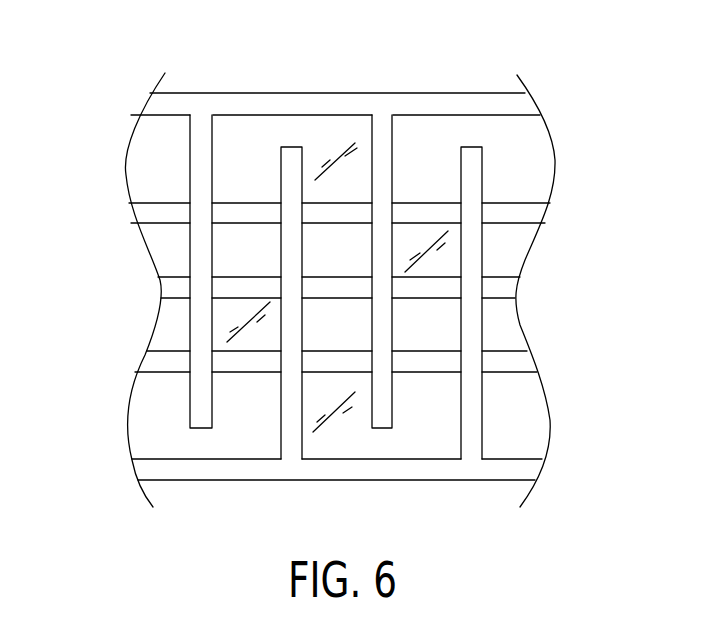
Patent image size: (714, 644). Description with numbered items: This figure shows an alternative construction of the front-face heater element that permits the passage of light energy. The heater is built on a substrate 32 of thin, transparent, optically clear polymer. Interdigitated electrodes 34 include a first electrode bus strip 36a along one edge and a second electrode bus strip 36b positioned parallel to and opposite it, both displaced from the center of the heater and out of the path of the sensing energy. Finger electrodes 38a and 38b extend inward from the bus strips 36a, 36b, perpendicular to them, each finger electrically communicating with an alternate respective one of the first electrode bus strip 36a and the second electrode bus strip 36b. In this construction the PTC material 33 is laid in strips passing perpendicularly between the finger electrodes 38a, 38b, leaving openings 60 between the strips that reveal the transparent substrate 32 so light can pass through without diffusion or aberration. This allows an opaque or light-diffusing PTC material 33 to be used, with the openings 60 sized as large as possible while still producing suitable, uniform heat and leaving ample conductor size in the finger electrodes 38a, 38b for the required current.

The substrate 32 is at (330, 135).
The PTC material 33 is at (178, 288).
The interdigitated electrodes 34 is at (473, 180).
The first electrode bus strip 36a is at (160, 105).
The second electrode bus strip 36b is at (523, 470).
The finger electrode 38a is at (203, 160).
The finger electrode 38b is at (287, 430).
The openings 60 is at (228, 317).